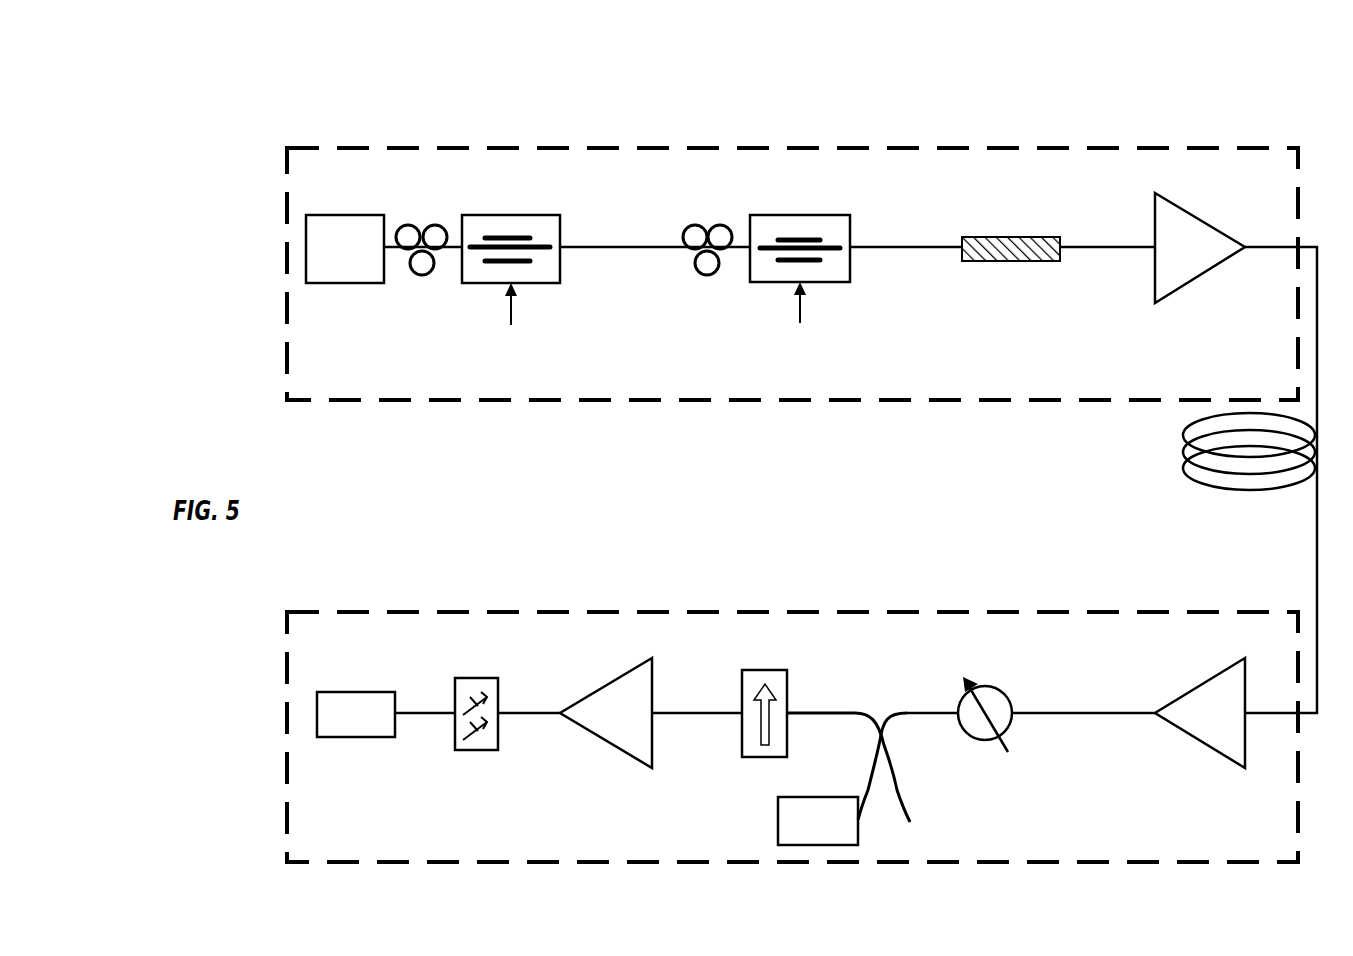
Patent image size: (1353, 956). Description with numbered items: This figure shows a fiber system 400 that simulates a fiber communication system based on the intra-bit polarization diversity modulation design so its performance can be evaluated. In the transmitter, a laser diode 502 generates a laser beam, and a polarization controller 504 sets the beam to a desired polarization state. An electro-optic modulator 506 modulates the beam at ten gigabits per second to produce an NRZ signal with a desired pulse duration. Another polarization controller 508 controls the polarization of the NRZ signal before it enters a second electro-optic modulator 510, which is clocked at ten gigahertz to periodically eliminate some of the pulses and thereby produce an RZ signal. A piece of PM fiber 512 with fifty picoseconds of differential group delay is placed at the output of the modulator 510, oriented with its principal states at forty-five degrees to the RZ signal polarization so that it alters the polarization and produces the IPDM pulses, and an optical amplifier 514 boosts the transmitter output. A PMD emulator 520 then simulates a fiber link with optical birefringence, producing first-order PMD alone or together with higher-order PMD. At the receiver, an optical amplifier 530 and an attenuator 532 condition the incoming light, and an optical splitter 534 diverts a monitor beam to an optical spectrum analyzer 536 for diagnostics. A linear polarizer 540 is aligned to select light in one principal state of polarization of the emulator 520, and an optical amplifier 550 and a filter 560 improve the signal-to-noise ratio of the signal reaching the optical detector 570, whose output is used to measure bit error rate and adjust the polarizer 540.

The experimental system 400 is at (234, 82).
The laser diode 502 is at (345, 283).
The polarization controller 504 is at (415, 224).
The electro-optic modulator 506 is at (481, 283).
The polarization controller 508 is at (718, 224).
The electro-optic modulator 510 is at (766, 282).
The PM fiber 512 is at (1035, 236).
The erbium doped fiber amplifier 514 is at (1190, 212).
The PMD emulator 520 is at (1185, 450).
The erbium doped fiber amplifier 530 is at (1212, 678).
The attenuator 532 is at (1005, 700).
The optical splitter 534 is at (893, 768).
The optical spectrum analyzer 536 is at (793, 797).
The linear polarizer 540 is at (765, 670).
The optical amplifier 550 is at (615, 680).
The filter 560 is at (472, 678).
The optical detector 570 is at (365, 691).